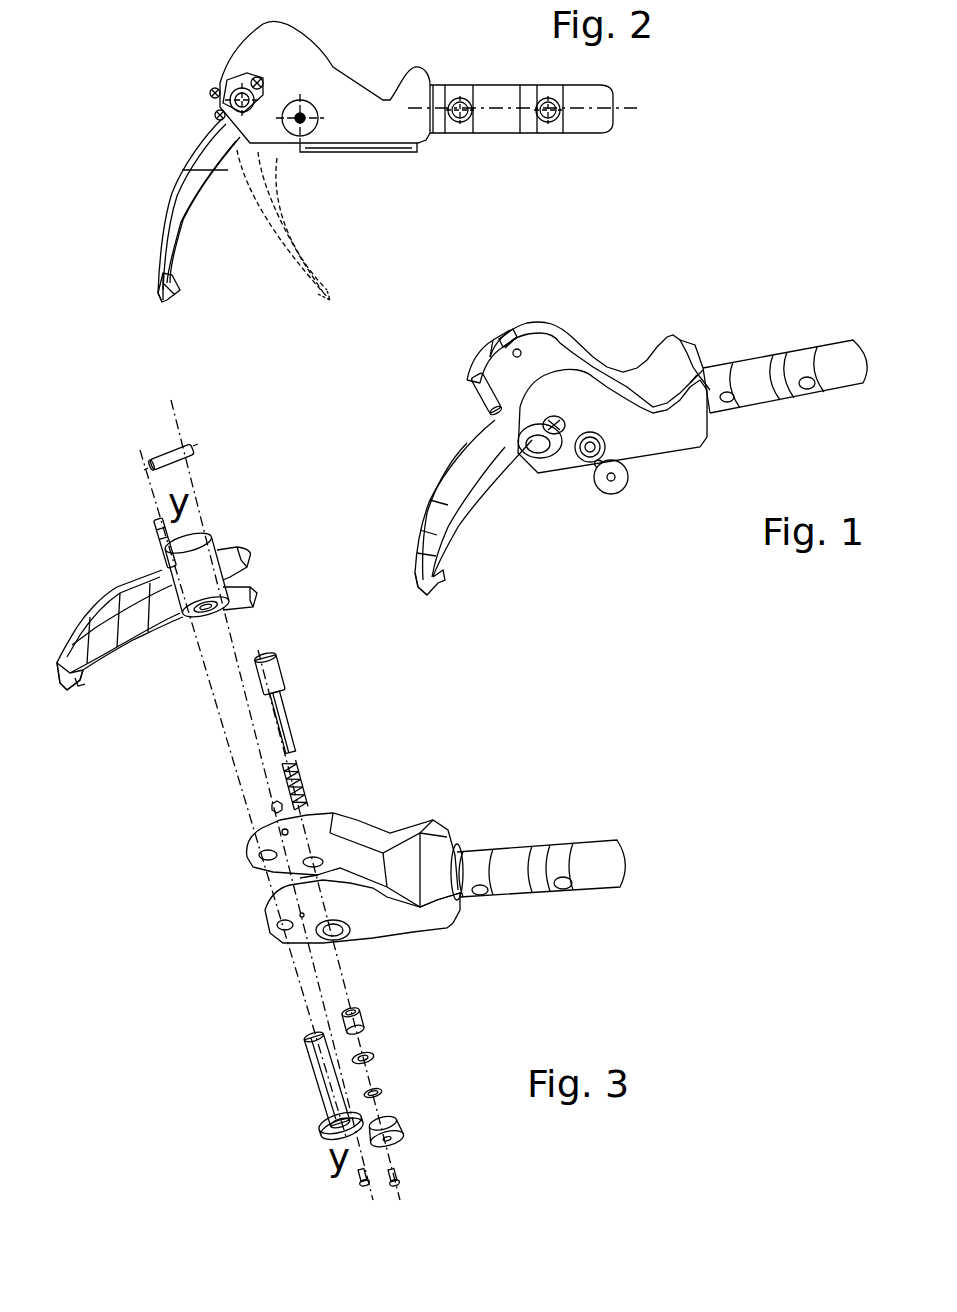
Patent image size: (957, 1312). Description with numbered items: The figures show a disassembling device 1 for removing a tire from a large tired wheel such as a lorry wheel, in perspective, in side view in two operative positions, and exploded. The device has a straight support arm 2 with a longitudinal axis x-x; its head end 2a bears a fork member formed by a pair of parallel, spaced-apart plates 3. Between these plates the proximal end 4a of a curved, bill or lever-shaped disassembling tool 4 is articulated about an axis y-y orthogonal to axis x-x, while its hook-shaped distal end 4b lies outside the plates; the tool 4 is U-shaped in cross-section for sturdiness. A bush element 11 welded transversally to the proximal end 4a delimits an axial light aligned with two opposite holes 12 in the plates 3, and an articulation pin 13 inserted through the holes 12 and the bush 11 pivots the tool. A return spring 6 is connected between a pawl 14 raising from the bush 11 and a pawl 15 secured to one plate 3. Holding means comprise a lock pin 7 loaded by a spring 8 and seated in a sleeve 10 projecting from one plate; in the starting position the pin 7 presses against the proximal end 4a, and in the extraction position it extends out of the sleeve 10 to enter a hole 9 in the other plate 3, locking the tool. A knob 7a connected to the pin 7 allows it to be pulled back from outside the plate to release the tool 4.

In FIG. 2, the disassembling device 1 is at (168, 57).
In FIG. 1, the disassembling device 1 is at (668, 515).
In FIG. 2, the support arm 2 is at (497, 133).
In FIG. 1, the support arm 2 is at (761, 357).
In FIG. 3, the support arm 2 is at (537, 845).
In FIG. 2, the head end 2a is at (434, 87).
In FIG. 1, the head end 2a is at (683, 352).
In FIG. 2, the plates 3 is at (327, 63).
In FIG. 1, the plates 3 is at (563, 323).
In FIG. 3, the plates 3 is at (390, 833).
In FIG. 2, the disassembling tool 4 is at (190, 152).
In FIG. 1, the disassembling tool 4 is at (475, 517).
In FIG. 3, the disassembling tool 4 is at (110, 581).
In FIG. 3, the proximal end 4a is at (241, 553).
In FIG. 2, the distal end 4b is at (172, 297).
In FIG. 1, the distal end 4b is at (430, 597).
In FIG. 3, the distal end 4b is at (80, 685).
In FIG. 2, the spring 6 is at (227, 80).
In FIG. 1, the spring 6 is at (490, 347).
In FIG. 3, the spring 6 is at (168, 447).
In FIG. 3, the pin 7 is at (284, 710).
In FIG. 2, the knob 7a is at (308, 128).
In FIG. 1, the knob 7a is at (612, 495).
In FIG. 3, the knob 7a is at (422, 1103).
In FIG. 1, the spring 8 is at (588, 462).
In FIG. 3, the spring 8 is at (304, 787).
In FIG. 3, the hole 9 is at (316, 858).
In FIG. 3, the sleeve 10 is at (300, 879).
In FIG. 1, the bush element 11 is at (527, 390).
In FIG. 3, the bush element 11 is at (200, 612).
In FIG. 3, the holes 12 is at (260, 862).
In FIG. 3, the articulation pin 13 is at (315, 1083).
In FIG. 1, the pawl 14 is at (478, 397).
In FIG. 3, the pawl 14 is at (157, 534).
In FIG. 3, the pawl 15 is at (274, 805).